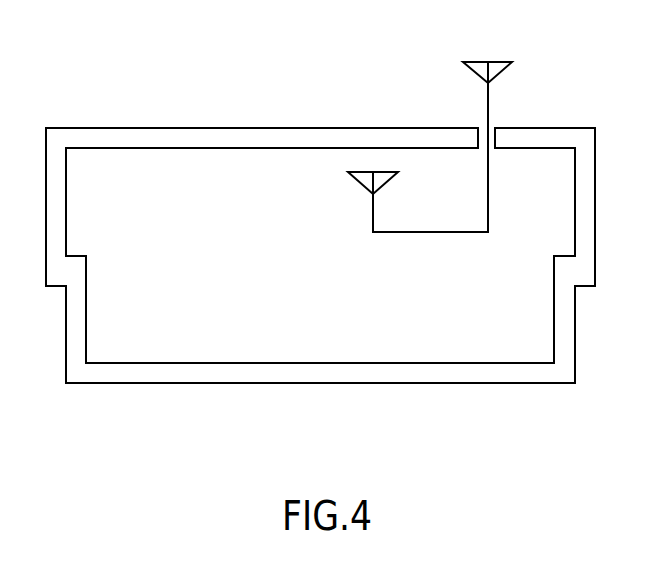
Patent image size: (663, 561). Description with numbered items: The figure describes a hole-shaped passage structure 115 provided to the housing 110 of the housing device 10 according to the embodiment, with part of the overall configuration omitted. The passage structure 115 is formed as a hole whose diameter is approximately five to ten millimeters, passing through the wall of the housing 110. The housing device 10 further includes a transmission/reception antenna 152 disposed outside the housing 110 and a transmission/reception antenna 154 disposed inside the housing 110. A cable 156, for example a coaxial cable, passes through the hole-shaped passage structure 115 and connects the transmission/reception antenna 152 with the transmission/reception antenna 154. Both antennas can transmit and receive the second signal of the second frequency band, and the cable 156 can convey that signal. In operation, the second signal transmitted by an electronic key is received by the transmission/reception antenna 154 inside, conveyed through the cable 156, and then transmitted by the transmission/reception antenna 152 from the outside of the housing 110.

The housing device 10 is at (292, 78).
The housing 110 is at (107, 121).
The passage structure 115 is at (496, 118).
The transmission/reception antenna 152 is at (458, 50).
The transmission/reception antenna 154 is at (339, 172).
The cable 156 is at (478, 243).